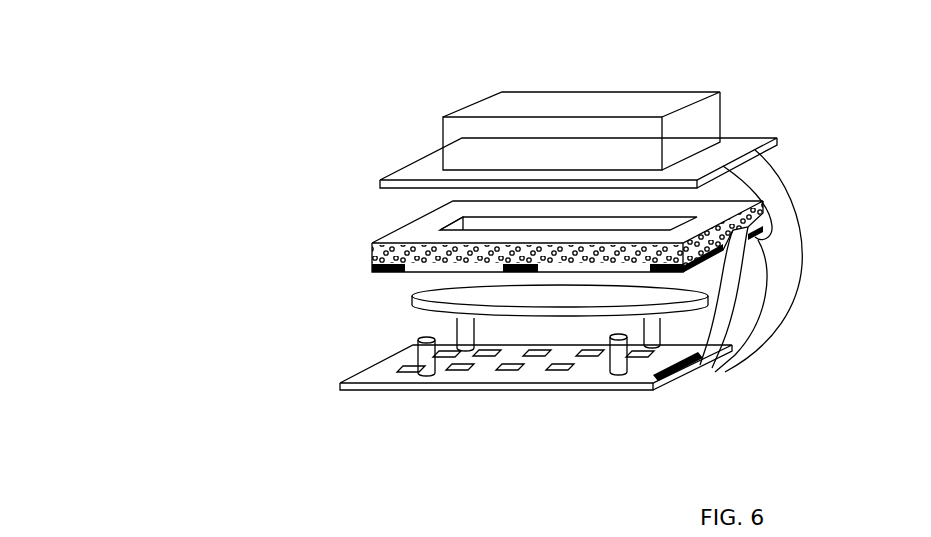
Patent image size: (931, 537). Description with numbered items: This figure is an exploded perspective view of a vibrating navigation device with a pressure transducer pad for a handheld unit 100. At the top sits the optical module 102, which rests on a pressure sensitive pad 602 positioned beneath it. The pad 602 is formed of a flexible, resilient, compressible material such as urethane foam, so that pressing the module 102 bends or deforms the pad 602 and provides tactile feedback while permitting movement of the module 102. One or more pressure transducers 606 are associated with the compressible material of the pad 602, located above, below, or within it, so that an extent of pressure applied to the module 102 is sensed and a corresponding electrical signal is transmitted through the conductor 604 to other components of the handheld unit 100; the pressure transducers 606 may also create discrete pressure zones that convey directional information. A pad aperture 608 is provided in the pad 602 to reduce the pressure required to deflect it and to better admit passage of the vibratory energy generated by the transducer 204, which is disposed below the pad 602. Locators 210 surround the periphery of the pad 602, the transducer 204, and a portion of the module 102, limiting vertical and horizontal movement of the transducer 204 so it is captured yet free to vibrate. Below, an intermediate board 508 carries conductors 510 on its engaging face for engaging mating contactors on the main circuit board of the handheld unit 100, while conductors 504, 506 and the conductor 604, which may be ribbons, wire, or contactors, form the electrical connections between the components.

The handheld unit 100 is at (330, 152).
The optical module 102 is at (408, 110).
The transducer 204 is at (412, 293).
The locators 210 is at (595, 368).
The conductor 504 is at (703, 320).
The conductor 506 is at (745, 315).
The intermediate board 508 is at (380, 373).
The conductors 510 is at (565, 375).
The pressure sensitive pad 602 is at (371, 254).
The conductor 604 is at (740, 272).
The pressure transducers 606 is at (380, 273).
The pad aperture 608 is at (485, 222).